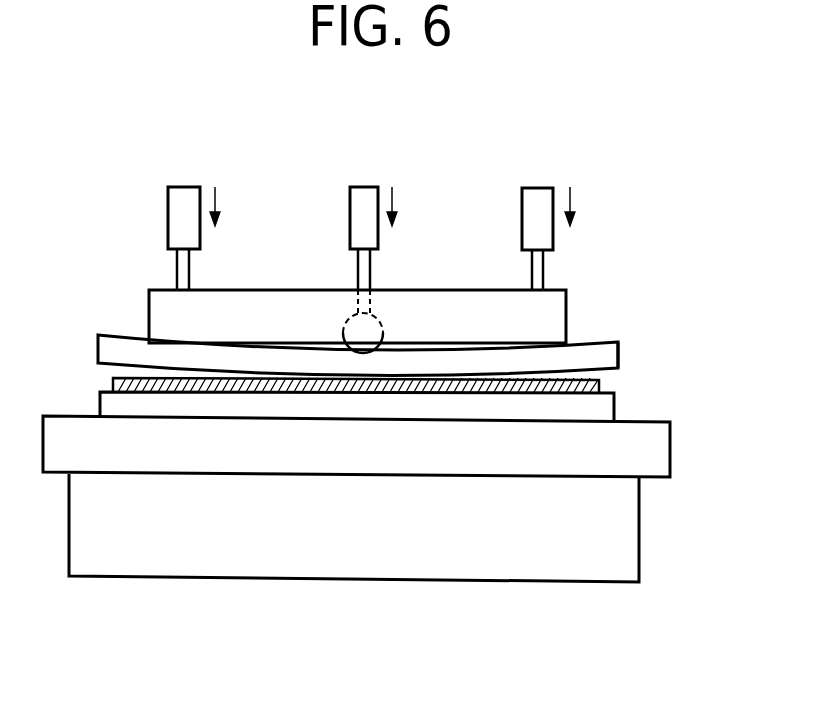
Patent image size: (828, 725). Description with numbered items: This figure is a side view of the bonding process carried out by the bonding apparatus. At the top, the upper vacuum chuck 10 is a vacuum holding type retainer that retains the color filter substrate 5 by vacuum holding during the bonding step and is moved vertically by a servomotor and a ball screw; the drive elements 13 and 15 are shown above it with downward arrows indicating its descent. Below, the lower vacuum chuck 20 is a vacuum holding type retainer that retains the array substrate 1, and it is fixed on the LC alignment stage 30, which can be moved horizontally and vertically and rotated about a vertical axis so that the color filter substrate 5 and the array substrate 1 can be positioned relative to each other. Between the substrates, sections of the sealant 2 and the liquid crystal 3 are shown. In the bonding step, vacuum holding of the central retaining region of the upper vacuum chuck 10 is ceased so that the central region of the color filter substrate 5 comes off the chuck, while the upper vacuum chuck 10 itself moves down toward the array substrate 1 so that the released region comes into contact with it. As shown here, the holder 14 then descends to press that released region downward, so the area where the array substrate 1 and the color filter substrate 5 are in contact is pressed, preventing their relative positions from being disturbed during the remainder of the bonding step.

The array substrate 1 is at (607, 405).
The sealant 2 is at (600, 386).
The liquid crystal 3 is at (572, 380).
The color filter substrate 5 is at (608, 357).
The upper vacuum chuck 10 is at (567, 303).
The actuator 13 is at (185, 187).
The holder 14 is at (382, 320).
The central actuator 15 is at (365, 187).
The lower vacuum chuck 20 is at (660, 452).
The LC alignment stage 30 is at (625, 543).